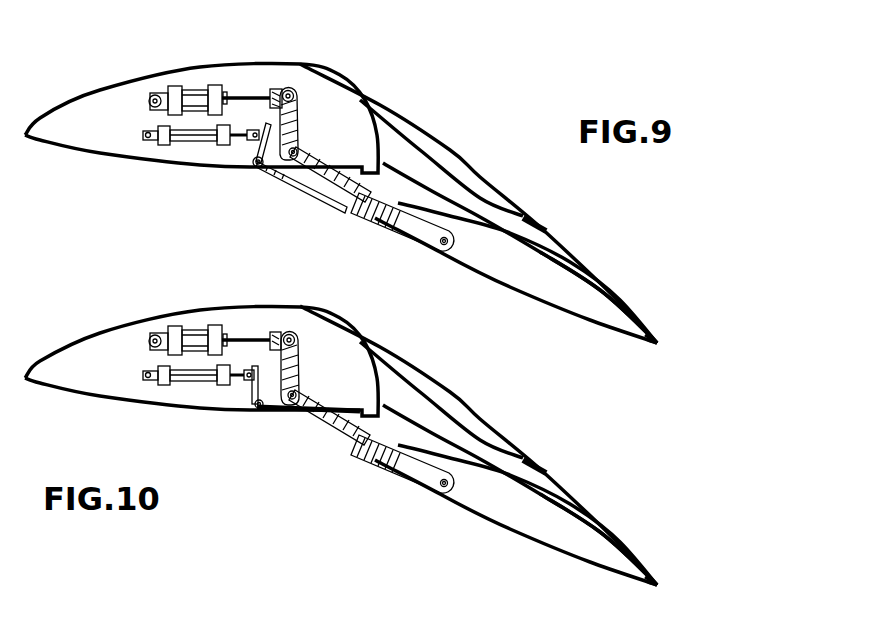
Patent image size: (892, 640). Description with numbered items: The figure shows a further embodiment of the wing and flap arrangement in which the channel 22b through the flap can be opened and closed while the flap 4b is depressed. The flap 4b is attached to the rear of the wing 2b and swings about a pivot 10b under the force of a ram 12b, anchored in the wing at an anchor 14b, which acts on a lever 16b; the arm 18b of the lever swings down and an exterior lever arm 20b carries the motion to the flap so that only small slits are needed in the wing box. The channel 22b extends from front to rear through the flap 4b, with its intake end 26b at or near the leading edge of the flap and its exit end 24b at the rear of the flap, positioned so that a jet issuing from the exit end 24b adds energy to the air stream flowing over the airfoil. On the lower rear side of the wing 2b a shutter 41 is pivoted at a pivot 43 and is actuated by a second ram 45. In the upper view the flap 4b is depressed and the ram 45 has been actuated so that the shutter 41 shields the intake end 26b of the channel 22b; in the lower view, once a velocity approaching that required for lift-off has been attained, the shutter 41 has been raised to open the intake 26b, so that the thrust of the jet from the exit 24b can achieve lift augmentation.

In FIG. 9, the wing 2b is at (108, 86).
In FIG. 10, the wing 2b is at (125, 320).
In FIG. 9, the flap 4b is at (436, 146).
In FIG. 10, the flap 4b is at (425, 396).
In FIG. 9, the pivot 10b is at (297, 151).
In FIG. 10, the pivot 10b is at (298, 395).
In FIG. 9, the ram 12b is at (197, 92).
In FIG. 10, the ram 12b is at (198, 333).
In FIG. 9, the ram anchor 14b is at (149, 101).
In FIG. 10, the ram anchor 14b is at (147, 342).
In FIG. 9, the lever 16b is at (297, 146).
In FIG. 10, the lever 16b is at (300, 360).
In FIG. 9, the arm of lever 18b is at (392, 232).
In FIG. 10, the arm of lever 18b is at (393, 472).
In FIG. 9, the exterior lever arm 20b is at (446, 254).
In FIG. 10, the exterior lever arm 20b is at (448, 494).
In FIG. 9, the channel 22b is at (528, 236).
In FIG. 10, the channel 22b is at (552, 492).
In FIG. 9, the exit end of channel 24b is at (655, 345).
In FIG. 10, the exit end of channel 24b is at (655, 585).
In FIG. 9, the intake end of channel 26b is at (391, 172).
In FIG. 10, the intake end of channel 26b is at (392, 424).
In FIG. 9, the shutter 41 is at (304, 191).
In FIG. 10, the shutter 41 is at (292, 412).
In FIG. 9, the shutter pivot 43 is at (254, 168).
In FIG. 10, the shutter pivot 43 is at (258, 413).
In FIG. 9, the ram 45 is at (186, 142).
In FIG. 10, the ram 45 is at (200, 378).